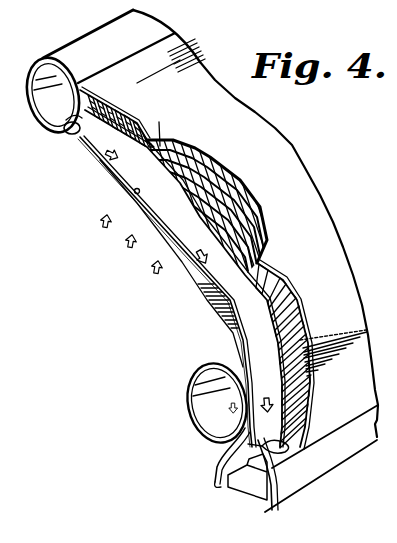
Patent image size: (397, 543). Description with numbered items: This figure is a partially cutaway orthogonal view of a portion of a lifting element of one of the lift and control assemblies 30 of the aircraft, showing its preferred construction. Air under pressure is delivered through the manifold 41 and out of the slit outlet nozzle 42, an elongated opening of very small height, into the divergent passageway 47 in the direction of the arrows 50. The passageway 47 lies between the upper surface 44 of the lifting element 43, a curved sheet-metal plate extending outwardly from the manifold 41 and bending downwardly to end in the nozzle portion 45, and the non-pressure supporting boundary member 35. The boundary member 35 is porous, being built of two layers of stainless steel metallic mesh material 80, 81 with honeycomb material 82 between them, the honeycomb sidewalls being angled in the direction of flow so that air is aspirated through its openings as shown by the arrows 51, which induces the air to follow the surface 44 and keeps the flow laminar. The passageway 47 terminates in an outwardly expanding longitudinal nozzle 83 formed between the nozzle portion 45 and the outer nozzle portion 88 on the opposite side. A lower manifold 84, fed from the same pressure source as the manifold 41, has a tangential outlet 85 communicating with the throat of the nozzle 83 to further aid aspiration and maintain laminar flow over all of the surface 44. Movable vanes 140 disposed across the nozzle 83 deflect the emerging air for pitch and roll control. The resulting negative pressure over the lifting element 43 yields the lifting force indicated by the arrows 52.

The lift and control assembly 30 is at (188, 332).
The non-pressure supporting boundary member 35 is at (298, 138).
The manifold 41 is at (97, 37).
The outlet nozzle 42 is at (73, 135).
The lifting element 43 is at (217, 309).
The upper surface 44 is at (137, 203).
The nozzle portion 45 is at (216, 478).
The divergent passageway 47 is at (160, 234).
The arrows (laminar flow) 50 is at (134, 190).
The arrows (aspirated air) 51 is at (160, 124).
The arrows (lifting force) 52 is at (108, 227).
The metallic mesh material 80 is at (201, 72).
The metallic mesh material 81 is at (133, 175).
The honeycomb material 82 is at (240, 183).
The longitudinal nozzle 83 is at (207, 459).
The lower manifold 84 is at (186, 401).
The tangential outlet 85 is at (283, 451).
The outer nozzle portion 88 is at (305, 490).
The vanes 140 is at (247, 492).